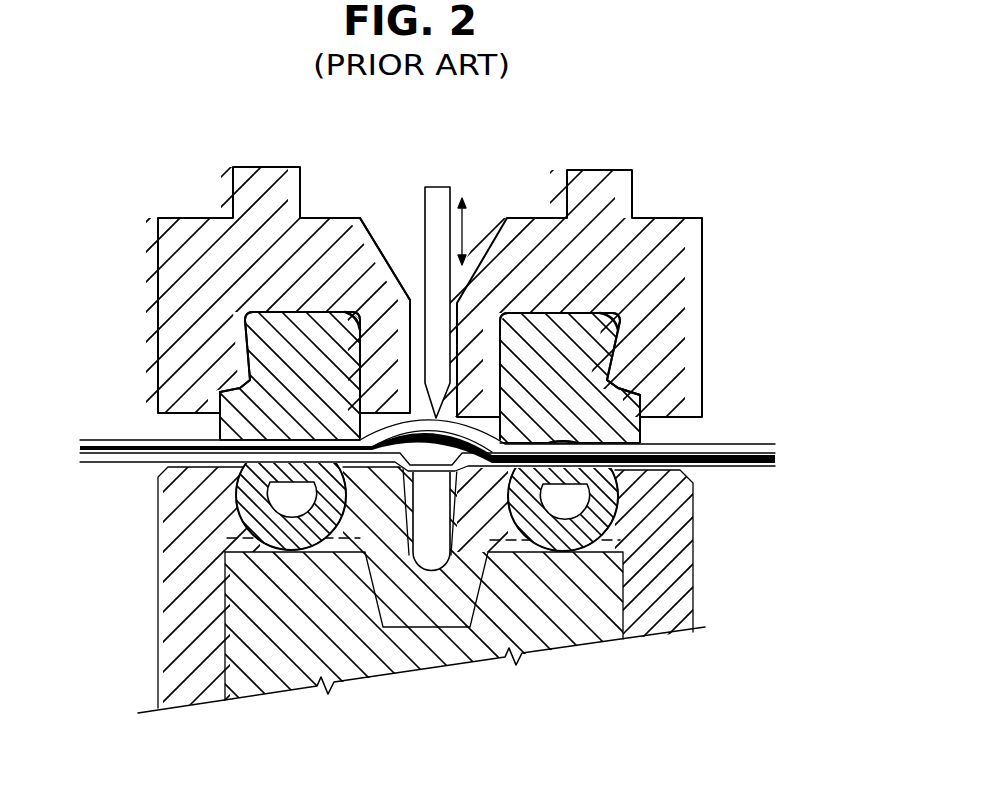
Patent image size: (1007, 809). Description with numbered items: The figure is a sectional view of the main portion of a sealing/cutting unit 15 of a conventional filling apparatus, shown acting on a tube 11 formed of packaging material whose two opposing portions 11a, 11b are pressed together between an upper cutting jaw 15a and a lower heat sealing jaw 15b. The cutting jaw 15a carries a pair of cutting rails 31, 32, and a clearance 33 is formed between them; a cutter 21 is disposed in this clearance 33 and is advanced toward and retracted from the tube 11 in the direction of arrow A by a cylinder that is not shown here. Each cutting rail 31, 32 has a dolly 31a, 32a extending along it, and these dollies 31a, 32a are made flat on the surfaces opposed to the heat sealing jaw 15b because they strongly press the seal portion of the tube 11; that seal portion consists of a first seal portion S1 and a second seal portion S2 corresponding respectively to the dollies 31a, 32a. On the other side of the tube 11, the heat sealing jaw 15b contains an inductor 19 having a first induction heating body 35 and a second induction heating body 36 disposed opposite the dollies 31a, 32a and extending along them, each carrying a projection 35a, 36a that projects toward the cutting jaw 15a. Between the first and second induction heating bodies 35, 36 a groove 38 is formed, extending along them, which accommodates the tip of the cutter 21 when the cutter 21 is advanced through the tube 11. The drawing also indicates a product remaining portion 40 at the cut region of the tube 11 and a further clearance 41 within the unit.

The tube 11 is at (445, 453).
The opposing portion of the packaging material 11a is at (117, 438).
The opposing portion of the packaging material 11b is at (105, 467).
The sealing/cutting unit 15 is at (503, 433).
The cutting jaw 15a is at (503, 420).
The heat sealing jaw 15b is at (503, 433).
The inductor 19 is at (145, 577).
The cutter 21 is at (436, 196).
The cutting rail 31 is at (354, 240).
The dolly 31a is at (250, 331).
The cutting rail 32 is at (517, 247).
The dolly 32a is at (612, 325).
The clearance 33 is at (410, 287).
The first induction heating body 35 is at (503, 433).
The projection 35a is at (297, 463).
The second induction heating body 36 is at (503, 420).
The projection 36a is at (553, 467).
The groove 38 is at (430, 557).
The product remaining portion 40 is at (432, 452).
The clearance 41 is at (605, 381).
The first seal portion S1 is at (288, 441).
The second seal portion S2 is at (570, 445).
The arrow (direction of cutter advance and retraction) A is at (471, 231).